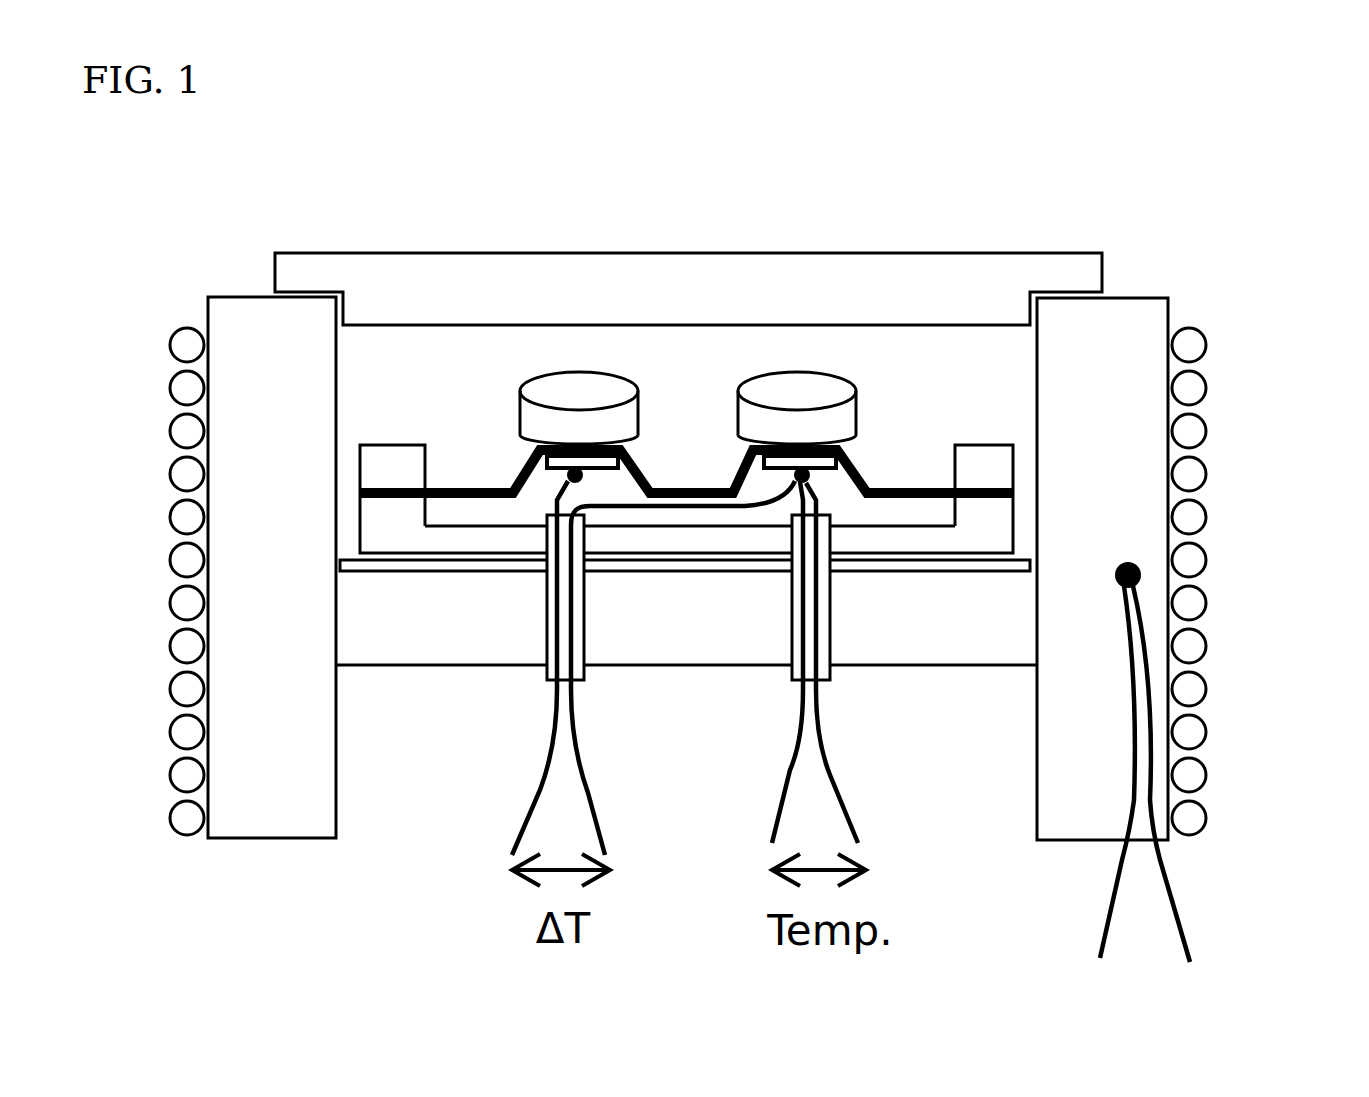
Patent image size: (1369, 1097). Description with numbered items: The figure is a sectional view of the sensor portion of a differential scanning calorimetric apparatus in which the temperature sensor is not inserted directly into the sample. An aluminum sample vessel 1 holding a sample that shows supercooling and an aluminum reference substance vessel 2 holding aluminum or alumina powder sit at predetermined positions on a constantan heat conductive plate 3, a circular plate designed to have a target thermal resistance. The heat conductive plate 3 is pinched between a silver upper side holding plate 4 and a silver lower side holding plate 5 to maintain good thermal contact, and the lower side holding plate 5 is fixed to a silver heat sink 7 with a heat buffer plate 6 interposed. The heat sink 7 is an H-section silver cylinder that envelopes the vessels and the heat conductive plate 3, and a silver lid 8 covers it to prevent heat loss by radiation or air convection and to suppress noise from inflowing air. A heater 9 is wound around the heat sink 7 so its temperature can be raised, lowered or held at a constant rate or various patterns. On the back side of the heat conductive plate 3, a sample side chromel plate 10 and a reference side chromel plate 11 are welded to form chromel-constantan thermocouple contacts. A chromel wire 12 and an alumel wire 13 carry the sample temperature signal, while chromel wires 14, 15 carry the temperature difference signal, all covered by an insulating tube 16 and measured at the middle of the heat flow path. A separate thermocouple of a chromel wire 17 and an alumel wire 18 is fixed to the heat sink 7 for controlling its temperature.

The sample vessel 1 is at (790, 390).
The reference substance vessel 2 is at (578, 390).
The heat conductive plate 3 is at (900, 483).
The upper side holding plate 4 is at (973, 465).
The lower side holding plate 5 is at (985, 528).
The heat buffer plate 6 is at (1010, 563).
The heat sink 7 is at (1093, 370).
The lid 8 is at (1002, 285).
The heater 9 is at (1190, 387).
The sample side chromel plate 10 is at (745, 495).
The reference side chromel plate 11 is at (517, 493).
The chromel wire 12 is at (847, 803).
The alumel wire 13 is at (785, 782).
The chromel wire 14 is at (600, 826).
The chromel wire 15 is at (522, 824).
The insulating tube 16 is at (793, 603).
The chromel wire 17 is at (1182, 932).
The alumel wire 18 is at (1108, 924).